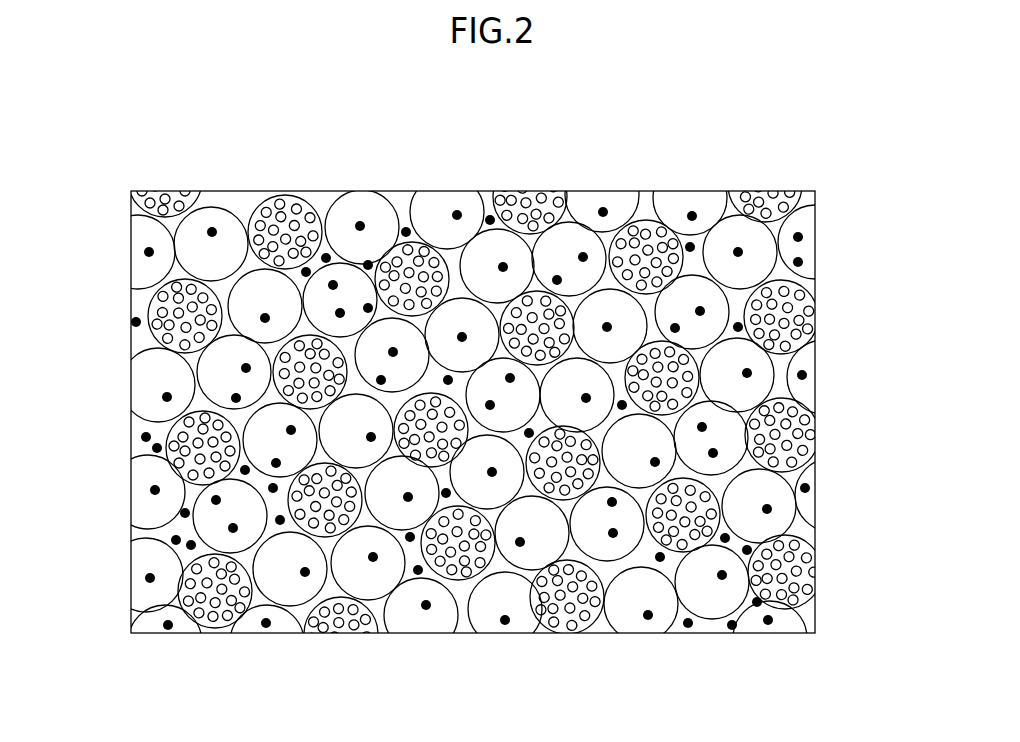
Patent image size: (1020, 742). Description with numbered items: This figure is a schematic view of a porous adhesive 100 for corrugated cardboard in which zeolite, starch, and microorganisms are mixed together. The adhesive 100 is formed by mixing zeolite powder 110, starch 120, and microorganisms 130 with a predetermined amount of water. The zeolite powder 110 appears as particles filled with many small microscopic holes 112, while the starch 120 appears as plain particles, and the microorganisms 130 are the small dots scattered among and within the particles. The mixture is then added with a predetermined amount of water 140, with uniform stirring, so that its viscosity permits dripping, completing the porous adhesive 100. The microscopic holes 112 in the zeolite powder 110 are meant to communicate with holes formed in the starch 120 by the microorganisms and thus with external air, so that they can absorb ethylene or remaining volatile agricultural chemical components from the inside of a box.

The porous adhesive for corrugated cardboard 100 is at (693, 190).
The zeolite powder 110 is at (293, 220).
The microscopic holes 112 is at (633, 232).
The starch 120 is at (437, 205).
The microorganisms 130 is at (155, 490).
The water 140 is at (643, 555).